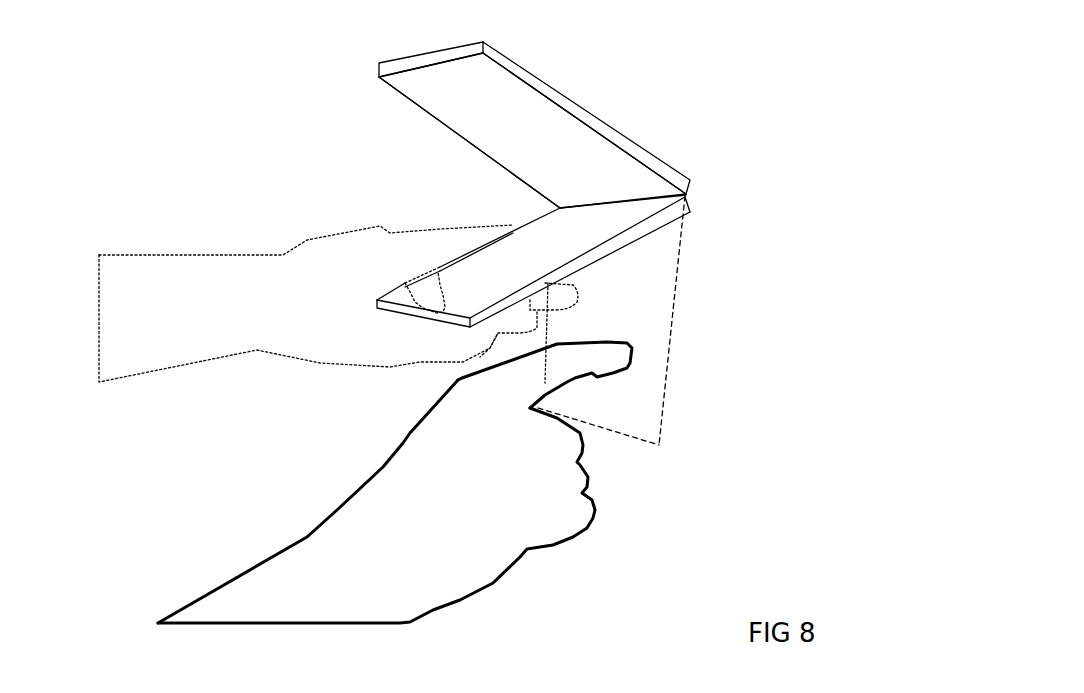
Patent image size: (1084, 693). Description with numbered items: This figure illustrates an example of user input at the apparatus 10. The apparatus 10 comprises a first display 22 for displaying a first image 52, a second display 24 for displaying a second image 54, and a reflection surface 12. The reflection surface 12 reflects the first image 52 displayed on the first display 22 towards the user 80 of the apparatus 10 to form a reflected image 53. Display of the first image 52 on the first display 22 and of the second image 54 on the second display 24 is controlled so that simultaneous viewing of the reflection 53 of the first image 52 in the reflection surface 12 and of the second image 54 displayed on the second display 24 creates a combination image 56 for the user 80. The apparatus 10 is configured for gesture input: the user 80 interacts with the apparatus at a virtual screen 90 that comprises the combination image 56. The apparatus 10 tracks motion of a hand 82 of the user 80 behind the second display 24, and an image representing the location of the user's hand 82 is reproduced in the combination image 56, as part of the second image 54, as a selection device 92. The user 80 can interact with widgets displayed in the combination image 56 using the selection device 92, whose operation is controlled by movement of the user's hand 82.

The apparatus 10 is at (677, 152).
The reflection surface 12 is at (547, 233).
The first display 22 is at (467, 123).
The second display 24 is at (652, 227).
The first image 52 is at (577, 142).
The reflected image 53 is at (583, 223).
The second image 54 is at (478, 287).
The combination image 56 is at (647, 327).
The user 80 is at (227, 270).
The hand 82 is at (393, 507).
The virtual screen 90 is at (660, 437).
The selection device 92 is at (552, 260).